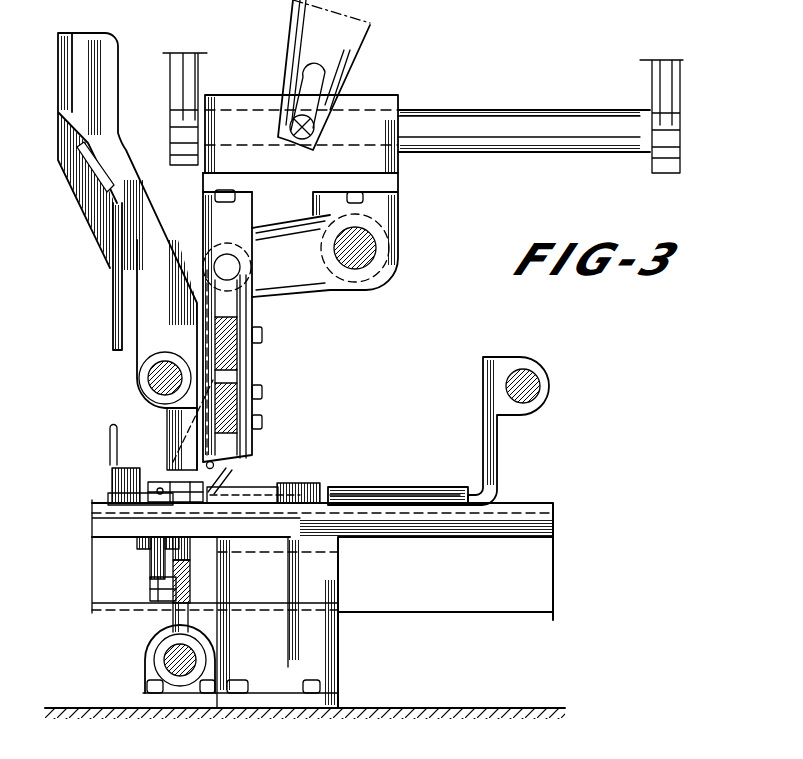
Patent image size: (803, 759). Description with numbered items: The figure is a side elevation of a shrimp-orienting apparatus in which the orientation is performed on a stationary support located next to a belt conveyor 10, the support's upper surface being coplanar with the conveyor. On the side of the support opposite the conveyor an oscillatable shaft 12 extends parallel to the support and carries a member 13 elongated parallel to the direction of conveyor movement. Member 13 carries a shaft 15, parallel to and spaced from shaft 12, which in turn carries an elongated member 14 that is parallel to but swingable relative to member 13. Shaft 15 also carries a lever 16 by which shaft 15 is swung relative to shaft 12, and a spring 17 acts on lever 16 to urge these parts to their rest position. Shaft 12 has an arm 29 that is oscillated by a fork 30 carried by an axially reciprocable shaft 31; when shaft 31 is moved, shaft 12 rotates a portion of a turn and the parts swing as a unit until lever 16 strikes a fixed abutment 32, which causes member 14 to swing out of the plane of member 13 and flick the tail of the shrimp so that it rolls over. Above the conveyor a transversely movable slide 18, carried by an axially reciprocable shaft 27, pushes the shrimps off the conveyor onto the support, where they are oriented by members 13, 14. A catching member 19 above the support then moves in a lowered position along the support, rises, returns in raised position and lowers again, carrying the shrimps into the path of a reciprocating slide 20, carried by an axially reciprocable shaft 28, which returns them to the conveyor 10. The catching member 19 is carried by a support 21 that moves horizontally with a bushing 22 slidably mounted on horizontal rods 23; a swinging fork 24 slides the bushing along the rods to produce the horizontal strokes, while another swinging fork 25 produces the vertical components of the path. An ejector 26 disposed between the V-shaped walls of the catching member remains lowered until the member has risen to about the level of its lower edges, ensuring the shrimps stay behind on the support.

The belt conveyor 10 is at (545, 510).
The oscillatable shaft 12 is at (137, 543).
The member 13 is at (152, 481).
The elongated member 14 is at (278, 500).
The shaft 15 is at (214, 466).
The lever 16 is at (109, 430).
The spring 17 is at (128, 466).
The transversely movable slide 18 is at (307, 484).
The catching member 19 is at (118, 498).
The reciprocating slide 20 is at (404, 487).
The support 21 is at (256, 365).
The bushing 22 is at (237, 130).
The horizontal rods 23 is at (547, 128).
The swinging fork 24 is at (340, 43).
The swinging fork 25 is at (292, 262).
The ejector 26 is at (215, 486).
The axially reciprocable shaft 27 is at (150, 378).
The axially reciprocable shaft 28 is at (530, 380).
The arm 29 is at (150, 588).
The fork 30 is at (186, 575).
The axially reciprocable shaft 31 is at (165, 661).
The fixed abutment 32 is at (112, 345).